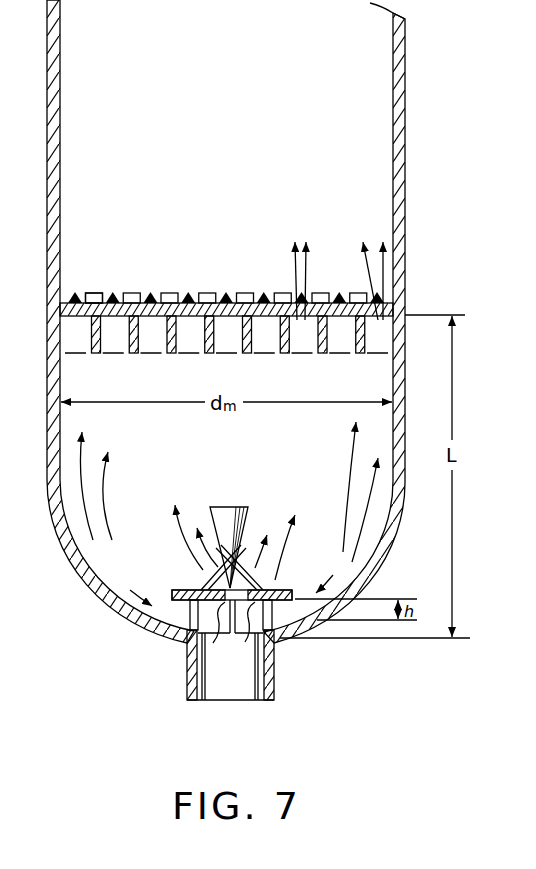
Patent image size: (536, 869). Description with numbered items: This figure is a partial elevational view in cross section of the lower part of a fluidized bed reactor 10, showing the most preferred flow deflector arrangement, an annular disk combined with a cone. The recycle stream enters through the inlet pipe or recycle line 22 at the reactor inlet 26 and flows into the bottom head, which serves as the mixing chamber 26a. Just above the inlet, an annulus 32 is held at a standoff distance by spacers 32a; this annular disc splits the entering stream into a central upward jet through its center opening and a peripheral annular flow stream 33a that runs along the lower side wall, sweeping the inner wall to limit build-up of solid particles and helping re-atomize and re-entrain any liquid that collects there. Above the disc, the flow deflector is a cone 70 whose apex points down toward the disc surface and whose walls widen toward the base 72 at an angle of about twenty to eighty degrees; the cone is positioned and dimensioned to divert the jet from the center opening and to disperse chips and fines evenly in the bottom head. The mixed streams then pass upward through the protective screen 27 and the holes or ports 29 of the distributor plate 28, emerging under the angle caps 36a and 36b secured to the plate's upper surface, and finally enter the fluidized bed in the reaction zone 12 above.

The reactor 10 is at (405, 226).
The reaction zone 12 is at (221, 119).
The inlet pipe or recycle line 22 is at (187, 677).
The reactor inlet 26 is at (274, 657).
The mixing chamber 26a is at (132, 523).
The protective screen 27 is at (292, 356).
The distributor plate 28 is at (86, 293).
The holes or ports 29 is at (151, 317).
The annulus 32 is at (278, 586).
The spacers 32a is at (230, 633).
The peripheral annular flow stream 33a is at (162, 615).
The angle cap 36a is at (116, 295).
The angle cap 36b is at (207, 292).
The cone 70 is at (245, 513).
The base 72 is at (214, 504).